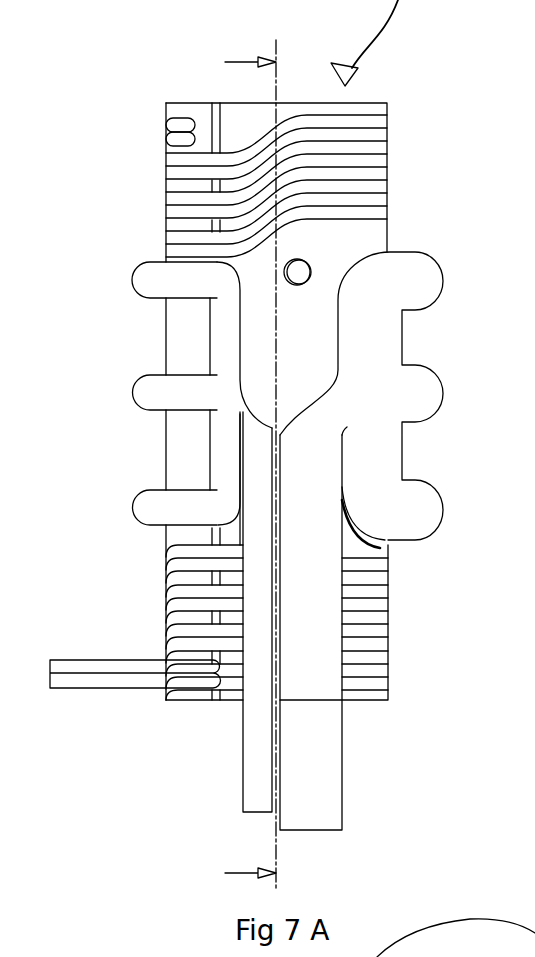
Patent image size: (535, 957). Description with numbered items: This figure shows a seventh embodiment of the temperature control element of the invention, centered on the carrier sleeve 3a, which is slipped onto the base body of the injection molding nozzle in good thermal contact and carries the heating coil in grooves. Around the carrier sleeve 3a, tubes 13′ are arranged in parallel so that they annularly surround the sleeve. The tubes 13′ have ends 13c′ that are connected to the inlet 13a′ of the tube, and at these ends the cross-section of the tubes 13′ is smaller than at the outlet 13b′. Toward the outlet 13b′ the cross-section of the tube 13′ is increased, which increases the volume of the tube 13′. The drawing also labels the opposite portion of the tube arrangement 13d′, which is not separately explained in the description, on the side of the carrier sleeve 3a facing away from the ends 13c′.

The carrier sleeve 3a is at (186, 110).
The ends of the tubes 13c′ is at (138, 238).
The right shroud 13d′ is at (421, 238).
The tubes 13′ is at (136, 283).
The inlet 13a′ is at (250, 805).
The outlet 13b′ is at (315, 823).